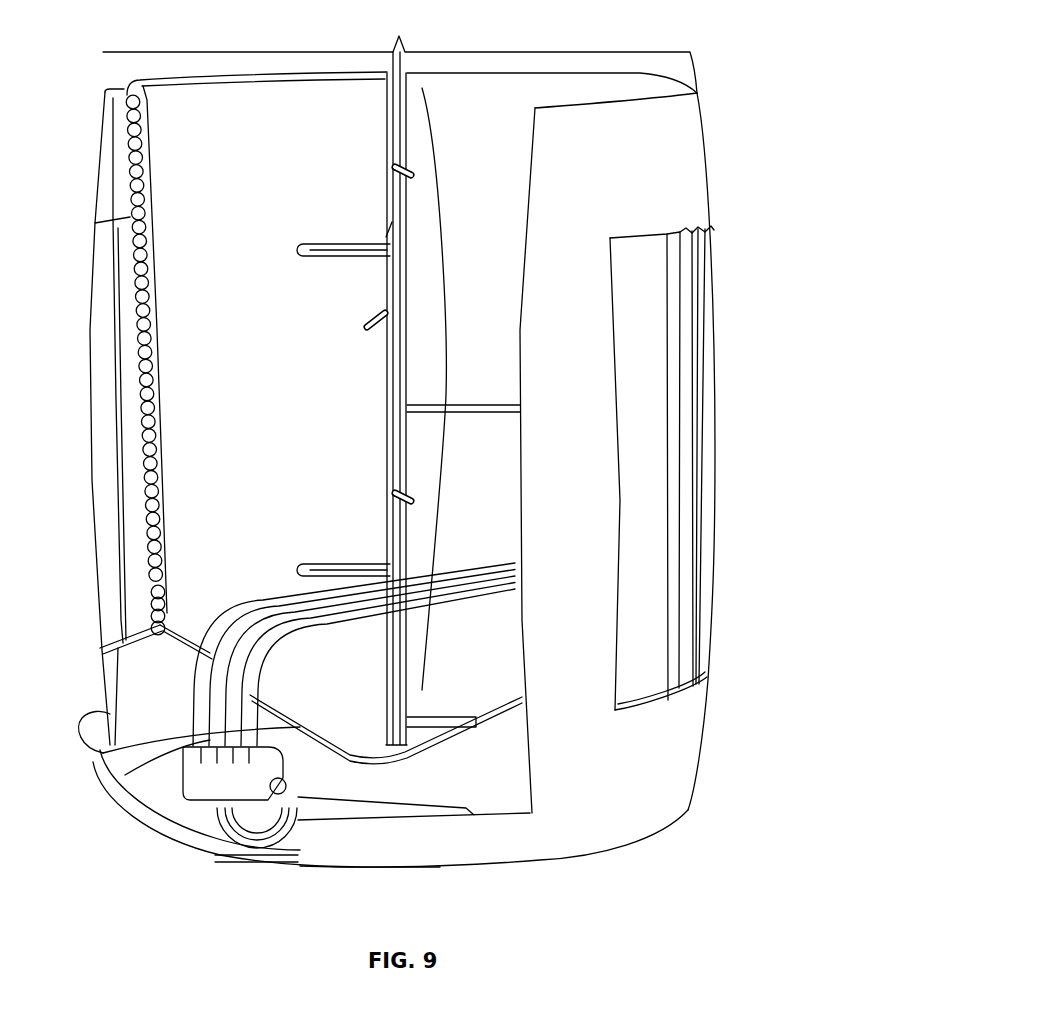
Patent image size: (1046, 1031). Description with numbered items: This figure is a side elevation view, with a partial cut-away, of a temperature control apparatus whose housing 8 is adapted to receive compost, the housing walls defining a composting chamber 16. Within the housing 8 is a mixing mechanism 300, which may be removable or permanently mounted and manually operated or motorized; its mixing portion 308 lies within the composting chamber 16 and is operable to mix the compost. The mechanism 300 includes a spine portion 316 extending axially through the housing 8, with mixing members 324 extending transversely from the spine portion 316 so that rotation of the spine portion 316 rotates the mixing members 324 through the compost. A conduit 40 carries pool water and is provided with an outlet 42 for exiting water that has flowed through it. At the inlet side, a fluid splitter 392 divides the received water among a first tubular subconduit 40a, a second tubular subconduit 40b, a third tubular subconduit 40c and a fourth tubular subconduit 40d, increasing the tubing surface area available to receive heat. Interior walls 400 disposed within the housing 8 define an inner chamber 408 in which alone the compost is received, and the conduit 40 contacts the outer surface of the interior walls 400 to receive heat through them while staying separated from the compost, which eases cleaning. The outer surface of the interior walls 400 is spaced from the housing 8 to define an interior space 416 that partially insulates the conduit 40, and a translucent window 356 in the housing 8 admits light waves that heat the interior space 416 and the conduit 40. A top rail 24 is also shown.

The housing 8 is at (683, 178).
The composting chamber 16 is at (505, 517).
The top rail 24 is at (677, 68).
The conduit 40 is at (147, 440).
The first tubular subconduit 40a is at (102, 768).
The second tubular subconduit 40b is at (210, 703).
The third tubular subconduit 40c is at (240, 662).
The fourth tubular subconduit 40d is at (265, 655).
The outlet 42 is at (257, 842).
The mixing mechanism 300 is at (364, 350).
The mixing portion 308 is at (460, 389).
The spine portion 316 is at (384, 187).
The mixing members 324 is at (330, 243).
The translucent window 356 is at (708, 305).
The fluid splitter 392 is at (213, 793).
The interior walls 400 is at (148, 488).
The inner chamber 408 is at (192, 525).
The interior space 416 is at (127, 415).